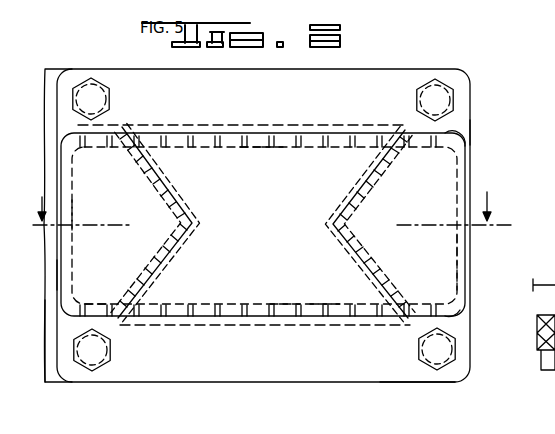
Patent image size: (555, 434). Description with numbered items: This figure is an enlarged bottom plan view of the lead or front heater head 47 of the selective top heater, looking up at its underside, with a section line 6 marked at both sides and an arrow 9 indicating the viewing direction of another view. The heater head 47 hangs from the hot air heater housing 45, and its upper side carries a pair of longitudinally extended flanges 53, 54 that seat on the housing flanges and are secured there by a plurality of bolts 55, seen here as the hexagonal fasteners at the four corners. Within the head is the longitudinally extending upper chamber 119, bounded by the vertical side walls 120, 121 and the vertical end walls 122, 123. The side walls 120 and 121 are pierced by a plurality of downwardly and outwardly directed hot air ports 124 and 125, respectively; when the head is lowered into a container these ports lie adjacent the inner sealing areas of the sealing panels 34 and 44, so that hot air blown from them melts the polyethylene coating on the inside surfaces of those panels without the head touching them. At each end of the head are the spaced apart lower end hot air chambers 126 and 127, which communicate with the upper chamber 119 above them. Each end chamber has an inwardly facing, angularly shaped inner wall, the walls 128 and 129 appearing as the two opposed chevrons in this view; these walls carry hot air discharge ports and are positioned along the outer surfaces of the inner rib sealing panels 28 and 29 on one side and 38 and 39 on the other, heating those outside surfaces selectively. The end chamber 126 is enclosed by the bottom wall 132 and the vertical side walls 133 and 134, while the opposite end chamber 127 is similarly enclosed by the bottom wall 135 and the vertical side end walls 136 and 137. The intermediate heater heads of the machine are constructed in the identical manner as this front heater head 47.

The section line 6- 6 is at (272, 201).
The lock bar 9 is at (172, 174).
The inner rib panel 28 is at (174, 279).
The inner rib panel 29 is at (190, 198).
The sealing panel 34 is at (300, 127).
The inner rib panel 38 is at (360, 183).
The inner rib panel 39 is at (352, 262).
The sealing panel 44 is at (250, 323).
The hot air heater housing 45 is at (52, 390).
The front heater head 47 is at (477, 131).
The longitudinally extended flange 53 is at (402, 72).
The longitudinally extended flange 54 is at (413, 372).
The bolts 55 is at (98, 102).
The upper chamber 119 is at (217, 324).
The vertical side wall 120 is at (274, 152).
The vertical side wall 121 is at (317, 304).
The vertical end wall 122 is at (66, 278).
The vertical end wall 123 is at (470, 248).
The hot air port 124 is at (250, 172).
The hot air port 125 is at (278, 305).
The lower end hot air chamber 126 is at (77, 213).
The lower end hot air chamber 127 is at (468, 278).
The angularly shaped inner wall 128 is at (200, 255).
The angularly shaped inner wall 129 is at (336, 212).
The bottom wall 132 is at (93, 157).
The vertical side wall 133 is at (98, 155).
The vertical side wall 134 is at (96, 312).
The bottom wall 135 is at (437, 193).
The vertical side end wall 136 is at (473, 143).
The vertical side end wall 137 is at (478, 322).